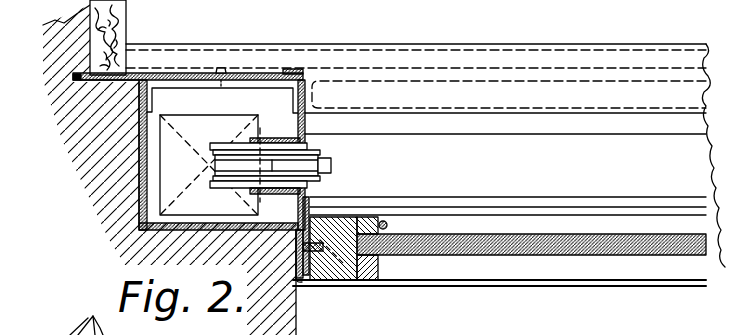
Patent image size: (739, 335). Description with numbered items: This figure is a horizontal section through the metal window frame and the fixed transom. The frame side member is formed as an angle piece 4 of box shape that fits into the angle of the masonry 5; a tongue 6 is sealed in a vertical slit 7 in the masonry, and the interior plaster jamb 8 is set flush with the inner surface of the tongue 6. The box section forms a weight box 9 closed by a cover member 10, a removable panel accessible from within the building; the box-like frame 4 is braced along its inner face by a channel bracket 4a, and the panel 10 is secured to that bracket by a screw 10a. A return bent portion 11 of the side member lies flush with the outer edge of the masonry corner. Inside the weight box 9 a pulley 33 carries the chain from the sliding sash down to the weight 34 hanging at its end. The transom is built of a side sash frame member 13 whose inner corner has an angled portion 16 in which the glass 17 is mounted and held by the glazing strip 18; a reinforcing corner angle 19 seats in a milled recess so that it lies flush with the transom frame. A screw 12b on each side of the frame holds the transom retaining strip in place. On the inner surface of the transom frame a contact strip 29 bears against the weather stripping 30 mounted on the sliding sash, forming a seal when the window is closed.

The angle piece 4 is at (138, 224).
The channel bracket 4a is at (252, 87).
The masonry 5 is at (113, 197).
The tongue 6 is at (96, 80).
The vertical slit 7 is at (73, 78).
The interior plaster jamb 8 is at (126, 24).
The weight box 9 is at (148, 149).
The cover member 10 is at (190, 76).
The screw 10a is at (228, 72).
The return bent portion 11 is at (292, 270).
The screw 12b is at (315, 218).
The side sash frame member 13 is at (379, 267).
The angled portion 16 is at (362, 281).
The glass 17 is at (452, 257).
The glazing strip 18 is at (358, 218).
The reinforcing corner angle 19 is at (327, 288).
The contact strip 29 is at (508, 212).
The weather stripping 30 is at (587, 203).
The pulley 33 is at (228, 145).
The weight 34 is at (236, 121).